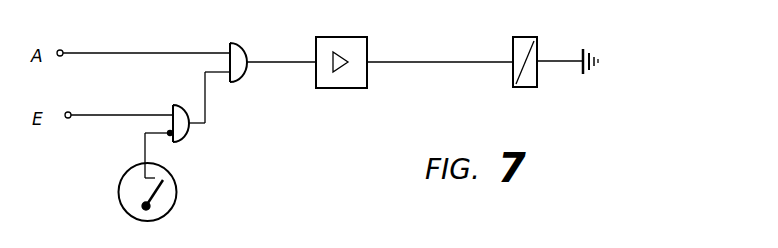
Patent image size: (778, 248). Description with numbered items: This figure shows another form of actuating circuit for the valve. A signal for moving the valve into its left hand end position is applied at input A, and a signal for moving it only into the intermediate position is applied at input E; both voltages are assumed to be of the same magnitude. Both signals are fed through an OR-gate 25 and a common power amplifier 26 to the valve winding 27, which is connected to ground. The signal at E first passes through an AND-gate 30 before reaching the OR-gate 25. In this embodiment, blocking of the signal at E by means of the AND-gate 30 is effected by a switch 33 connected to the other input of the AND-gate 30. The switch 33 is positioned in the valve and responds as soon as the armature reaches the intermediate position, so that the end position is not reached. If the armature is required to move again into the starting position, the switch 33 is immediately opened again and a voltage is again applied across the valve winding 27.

The OR-gate 25 is at (246, 52).
The common power amplifier 26 is at (364, 52).
The valve winding 27 is at (513, 50).
The AND-gate 30 is at (186, 136).
The switch 33 is at (175, 205).